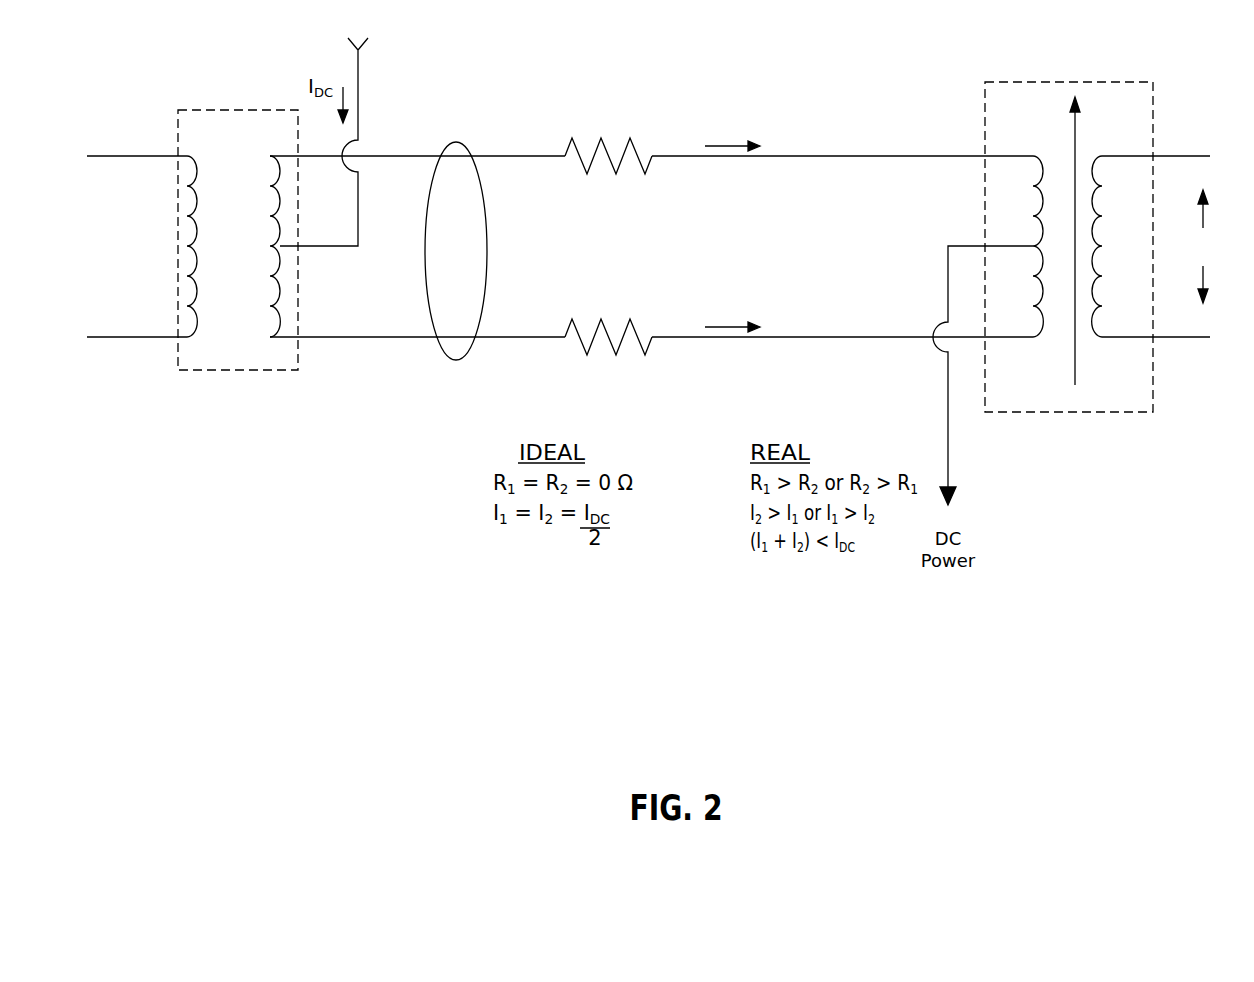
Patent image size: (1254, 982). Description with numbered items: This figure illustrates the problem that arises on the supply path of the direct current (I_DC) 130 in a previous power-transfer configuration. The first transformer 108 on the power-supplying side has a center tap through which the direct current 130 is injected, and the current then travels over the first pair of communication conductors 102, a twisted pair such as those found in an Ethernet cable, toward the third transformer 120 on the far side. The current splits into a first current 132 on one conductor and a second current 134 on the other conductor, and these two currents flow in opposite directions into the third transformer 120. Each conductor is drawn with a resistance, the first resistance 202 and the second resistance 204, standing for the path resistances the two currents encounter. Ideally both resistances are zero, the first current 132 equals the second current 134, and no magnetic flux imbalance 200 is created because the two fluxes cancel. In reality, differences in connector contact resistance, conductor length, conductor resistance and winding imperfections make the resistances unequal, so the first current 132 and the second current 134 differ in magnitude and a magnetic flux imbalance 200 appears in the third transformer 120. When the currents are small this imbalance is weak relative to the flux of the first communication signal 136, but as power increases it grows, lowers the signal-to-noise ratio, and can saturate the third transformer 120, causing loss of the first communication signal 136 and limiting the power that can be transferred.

The first pair of communication conductors 102 is at (453, 133).
The first transformer 108 is at (221, 139).
The third transformer 120 is at (1028, 109).
The direct current (I_DC) 130 is at (298, 92).
The first current (I_1) 132 is at (732, 117).
The second current (I_2) 134 is at (732, 297).
The first communication signal 136 is at (1203, 246).
The magnetic flux imbalance 200 is at (1082, 343).
The first resistance R1 202 is at (622, 92).
The second resistance R2 204 is at (622, 278).